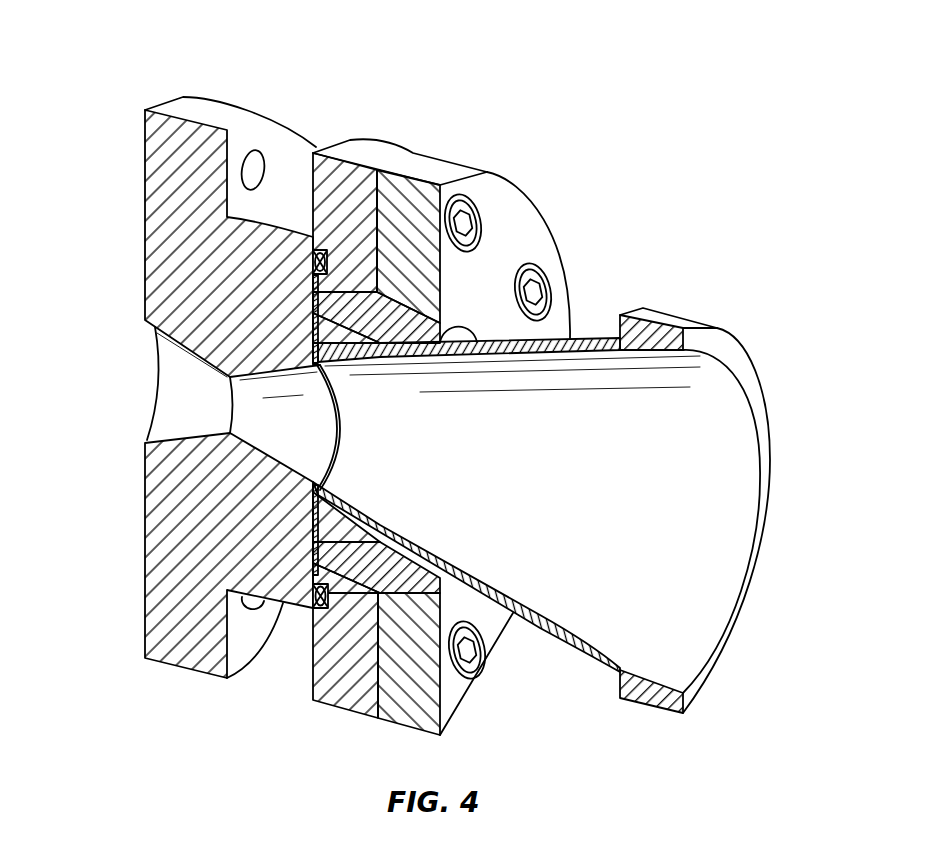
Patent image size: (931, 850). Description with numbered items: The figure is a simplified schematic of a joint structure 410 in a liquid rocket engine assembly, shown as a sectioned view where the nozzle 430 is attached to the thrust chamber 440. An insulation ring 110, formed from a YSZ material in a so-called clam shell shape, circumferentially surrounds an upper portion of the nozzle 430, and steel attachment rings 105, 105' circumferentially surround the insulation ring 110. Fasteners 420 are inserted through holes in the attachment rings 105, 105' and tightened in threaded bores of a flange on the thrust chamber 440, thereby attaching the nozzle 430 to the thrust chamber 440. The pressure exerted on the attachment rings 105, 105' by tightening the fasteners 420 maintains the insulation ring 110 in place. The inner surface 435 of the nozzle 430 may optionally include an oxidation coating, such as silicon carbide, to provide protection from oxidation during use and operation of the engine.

The thrust chamber 440 is at (180, 150).
The joint structure 410 is at (430, 138).
The attachment ring 105' is at (351, 391).
The attachment ring 105 is at (474, 423).
The fasteners 420 is at (478, 220).
The nozzle 430 is at (660, 310).
The inner surface 435 is at (663, 562).
The insulation ring 110 is at (381, 568).